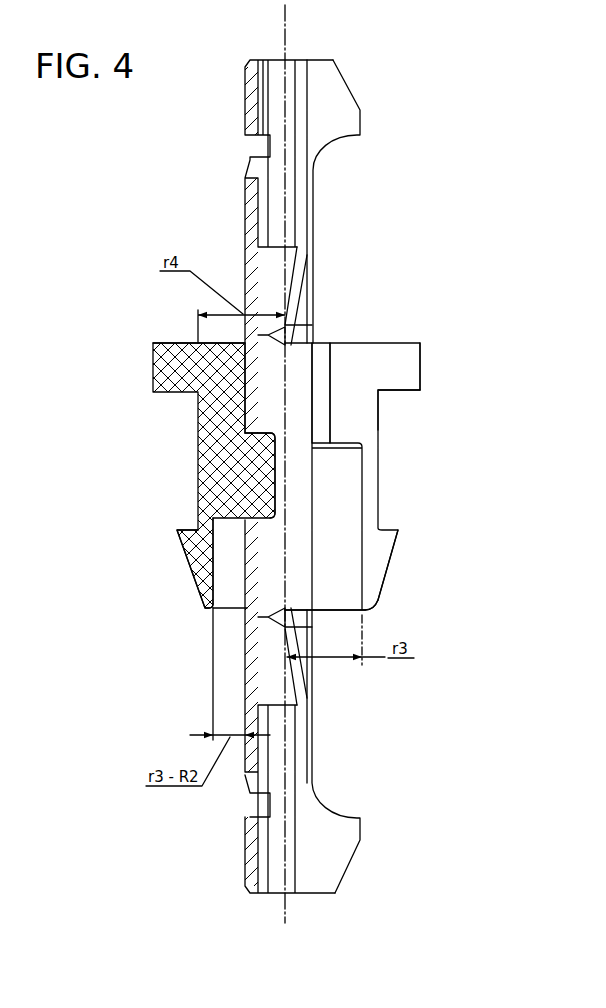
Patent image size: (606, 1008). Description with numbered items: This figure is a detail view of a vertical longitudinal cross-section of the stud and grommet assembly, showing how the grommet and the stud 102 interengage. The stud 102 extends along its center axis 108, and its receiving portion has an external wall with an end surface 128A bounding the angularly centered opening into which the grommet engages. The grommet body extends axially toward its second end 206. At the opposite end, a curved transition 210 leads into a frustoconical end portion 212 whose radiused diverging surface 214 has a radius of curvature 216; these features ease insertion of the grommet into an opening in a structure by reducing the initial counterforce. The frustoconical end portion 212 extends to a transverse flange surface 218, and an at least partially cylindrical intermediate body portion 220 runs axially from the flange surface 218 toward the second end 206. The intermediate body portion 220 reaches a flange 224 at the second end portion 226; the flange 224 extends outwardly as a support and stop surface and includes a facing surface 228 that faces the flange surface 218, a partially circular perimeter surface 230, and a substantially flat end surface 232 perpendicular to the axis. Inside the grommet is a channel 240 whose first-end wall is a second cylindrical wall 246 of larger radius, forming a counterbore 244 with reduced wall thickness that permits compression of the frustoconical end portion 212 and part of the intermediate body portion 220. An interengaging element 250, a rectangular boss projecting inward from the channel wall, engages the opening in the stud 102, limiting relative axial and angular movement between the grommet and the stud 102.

The stud 102 is at (416, 103).
The center axis 108 is at (369, 464).
The end surface 128A is at (313, 420).
The second end 206 is at (379, 336).
The curved transition 210 is at (370, 612).
The frustoconical end portion 212 is at (168, 572).
The radiused diverging surface 214 is at (392, 549).
The radius of curvature 216 is at (386, 567).
The flange surface 218 is at (187, 530).
The intermediate body portion 220 is at (198, 440).
The flange 224 is at (395, 362).
The second end portion 226 is at (147, 365).
The facing surface 228 is at (400, 393).
The perimeter surface 230 is at (422, 364).
The flat surface 232 is at (178, 340).
The channel 240 is at (322, 362).
The counterbore 244 is at (231, 612).
The second cylindrical wall 246 is at (212, 588).
The interengaging element 250 is at (276, 472).